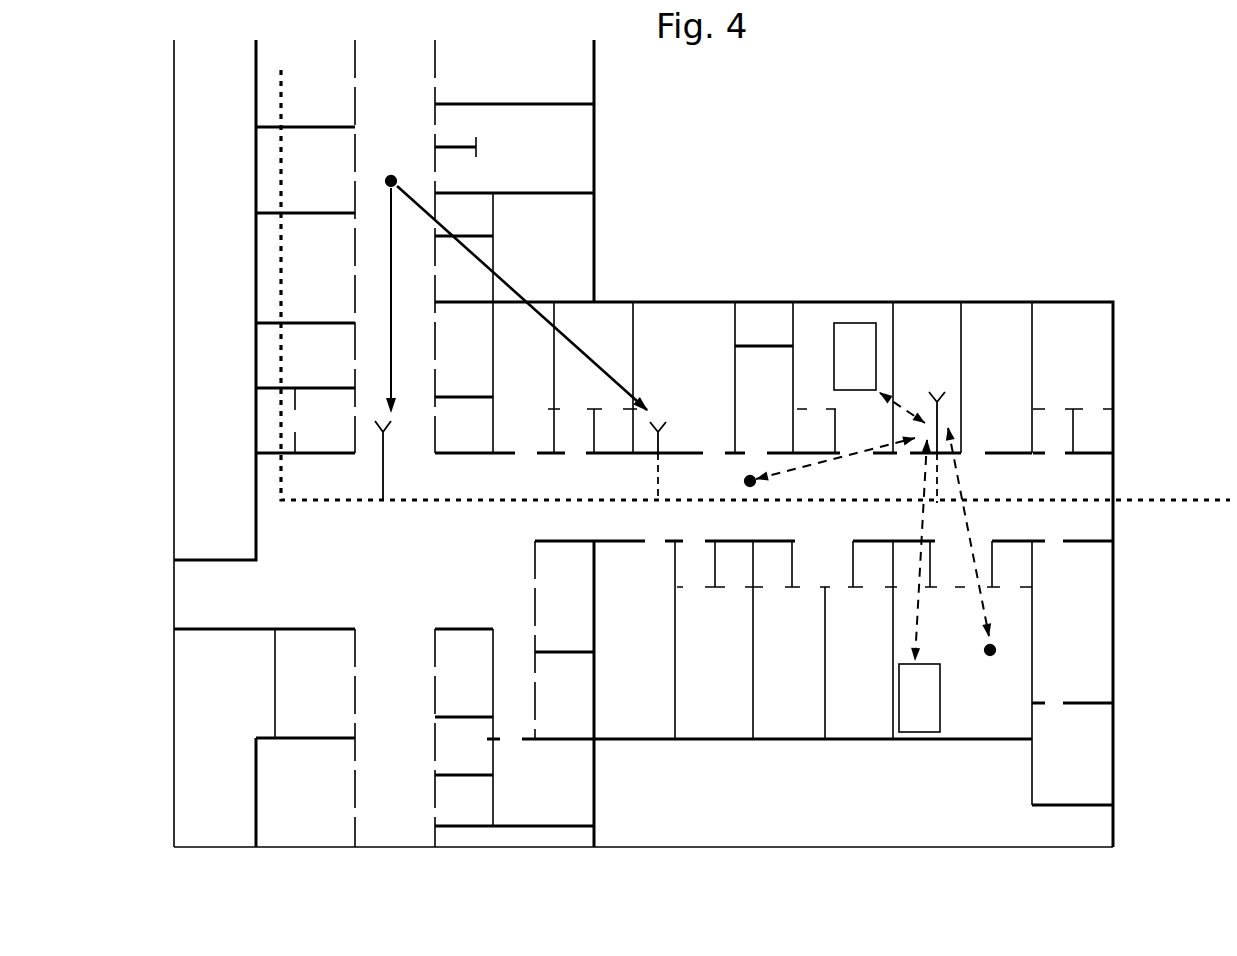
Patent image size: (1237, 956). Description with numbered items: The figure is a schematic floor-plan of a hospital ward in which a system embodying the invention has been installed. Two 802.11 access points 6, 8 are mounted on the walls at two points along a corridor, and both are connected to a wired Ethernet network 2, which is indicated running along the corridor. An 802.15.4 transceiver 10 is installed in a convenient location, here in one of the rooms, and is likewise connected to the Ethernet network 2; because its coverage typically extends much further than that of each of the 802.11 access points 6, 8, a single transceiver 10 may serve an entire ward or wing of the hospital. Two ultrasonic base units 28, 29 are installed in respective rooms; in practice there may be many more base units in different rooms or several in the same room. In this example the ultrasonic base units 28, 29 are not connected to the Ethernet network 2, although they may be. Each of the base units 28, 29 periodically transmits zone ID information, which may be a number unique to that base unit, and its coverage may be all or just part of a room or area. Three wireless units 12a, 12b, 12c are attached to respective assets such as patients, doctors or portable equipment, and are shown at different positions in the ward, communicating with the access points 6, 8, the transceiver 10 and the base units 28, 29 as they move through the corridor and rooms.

The wired Ethernet network 2 is at (1181, 506).
The 802.11 access point 6 is at (385, 449).
The 802.11 access point 8 is at (661, 422).
The 802.15.4 transceiver 10 is at (937, 390).
The wireless unit 12a is at (391, 173).
The wireless unit 12b is at (744, 481).
The wireless unit 12c is at (990, 657).
The ultrasonic base unit 28 is at (843, 335).
The ultrasonic base unit 29 is at (920, 714).